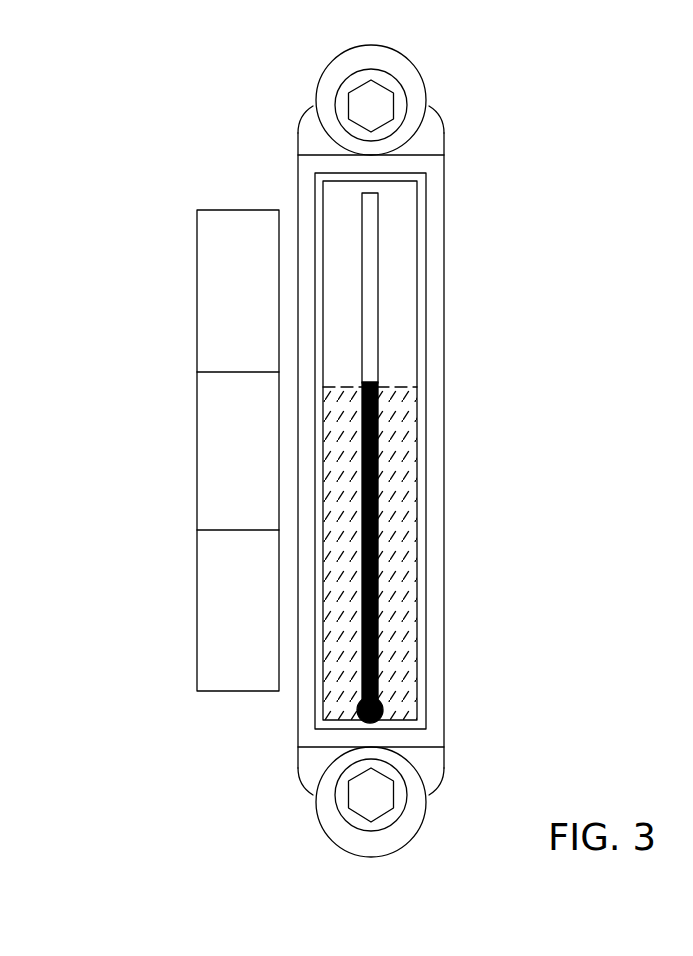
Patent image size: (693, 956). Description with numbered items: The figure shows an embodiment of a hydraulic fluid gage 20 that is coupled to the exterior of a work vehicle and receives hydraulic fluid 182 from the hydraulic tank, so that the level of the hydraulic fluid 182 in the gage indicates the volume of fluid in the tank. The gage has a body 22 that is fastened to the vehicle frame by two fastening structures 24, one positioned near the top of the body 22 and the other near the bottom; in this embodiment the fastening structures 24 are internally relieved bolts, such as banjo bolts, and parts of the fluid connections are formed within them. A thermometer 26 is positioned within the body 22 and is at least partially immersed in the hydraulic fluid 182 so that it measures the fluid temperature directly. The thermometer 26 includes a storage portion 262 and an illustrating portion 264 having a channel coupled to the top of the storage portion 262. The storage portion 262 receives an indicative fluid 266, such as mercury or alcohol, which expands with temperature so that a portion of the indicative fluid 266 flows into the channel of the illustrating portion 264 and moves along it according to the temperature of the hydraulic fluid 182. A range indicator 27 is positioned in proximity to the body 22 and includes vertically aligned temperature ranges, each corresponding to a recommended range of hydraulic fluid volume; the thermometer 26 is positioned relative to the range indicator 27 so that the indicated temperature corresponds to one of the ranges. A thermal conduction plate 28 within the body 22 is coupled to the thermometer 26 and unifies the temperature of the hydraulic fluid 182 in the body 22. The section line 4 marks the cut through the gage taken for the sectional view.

The section line 4- 4 is at (327, 5).
The hydraulic fluid gage 20 is at (440, 448).
The body 22 is at (395, 356).
The fastening structure 24 is at (366, 104).
The thermometer 26 is at (438, 458).
The range indicator 27 is at (112, 467).
The thermal conduction plate 28 is at (395, 293).
The hydraulic fluid 182 is at (395, 435).
The storage portion 262 is at (380, 703).
The illustrating portion 264 is at (378, 231).
The indicative fluid 266 is at (378, 500).